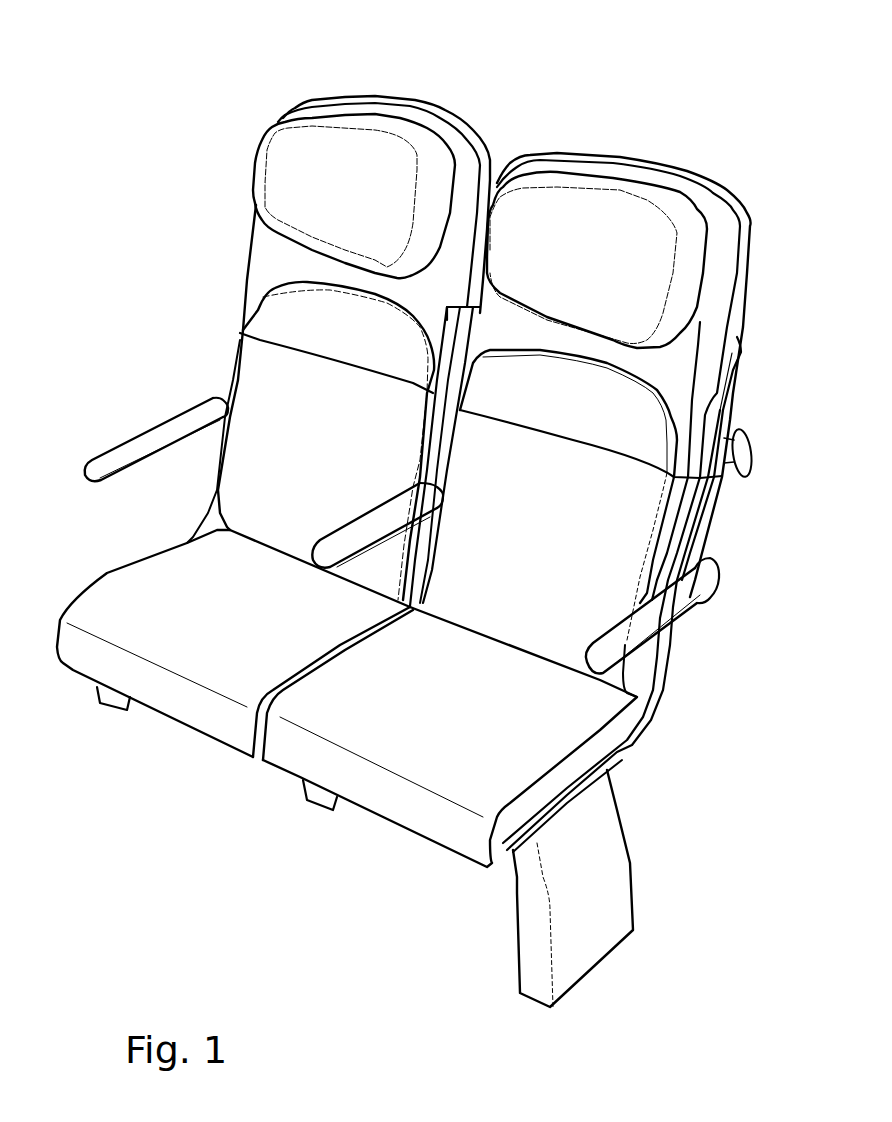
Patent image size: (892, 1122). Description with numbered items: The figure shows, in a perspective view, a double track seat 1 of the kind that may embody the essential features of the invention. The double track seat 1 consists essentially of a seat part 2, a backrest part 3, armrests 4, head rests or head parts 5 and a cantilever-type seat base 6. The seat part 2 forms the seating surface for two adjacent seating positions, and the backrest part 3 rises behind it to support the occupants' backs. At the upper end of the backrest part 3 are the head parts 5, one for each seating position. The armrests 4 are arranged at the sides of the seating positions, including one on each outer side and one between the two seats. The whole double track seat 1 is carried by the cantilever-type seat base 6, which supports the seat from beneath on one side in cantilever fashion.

The double track seat 1 is at (205, 74).
The seat part 2 is at (425, 767).
The backrest part 3 is at (693, 343).
The armrests 4 is at (157, 442).
The head rests or head parts 5 is at (373, 150).
The cantilever-type seat base 6 is at (597, 863).